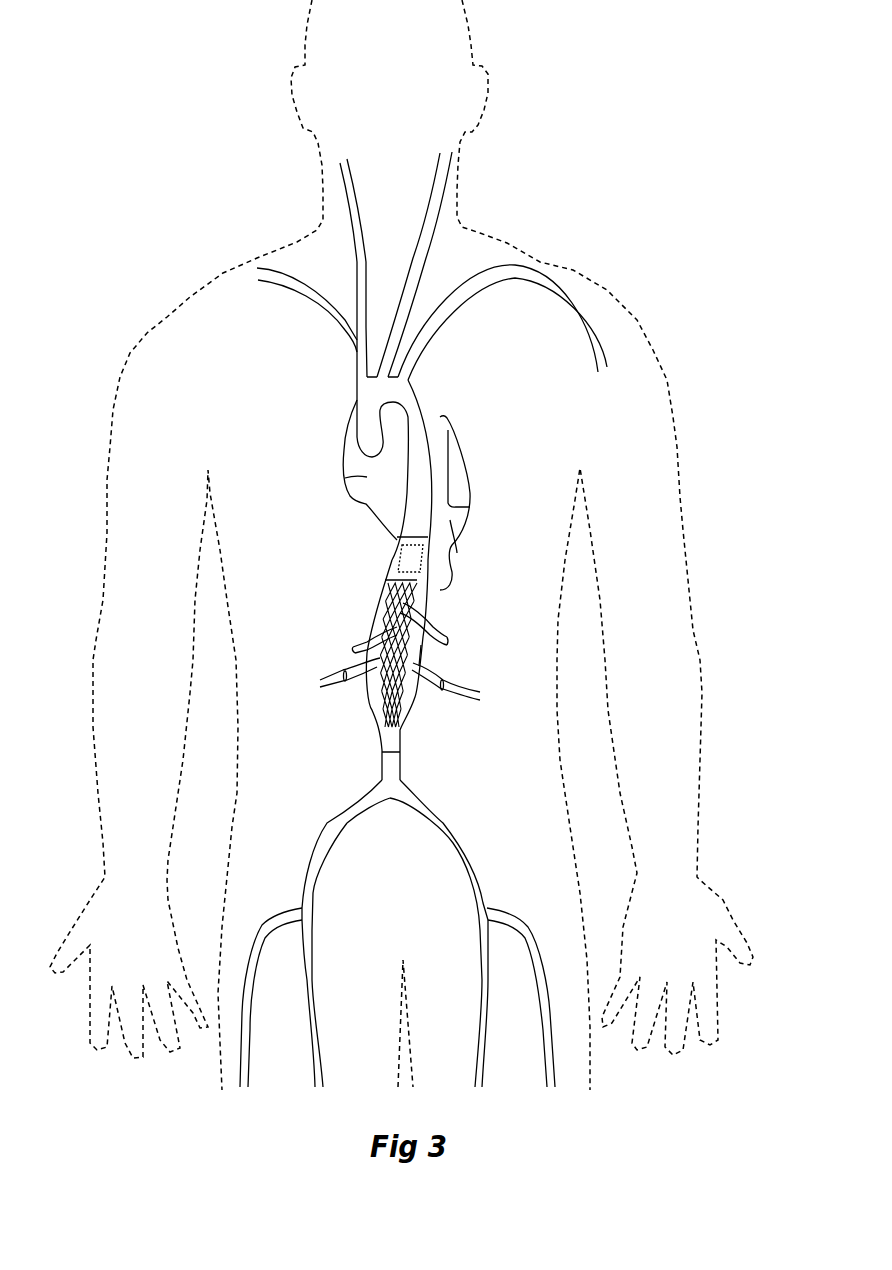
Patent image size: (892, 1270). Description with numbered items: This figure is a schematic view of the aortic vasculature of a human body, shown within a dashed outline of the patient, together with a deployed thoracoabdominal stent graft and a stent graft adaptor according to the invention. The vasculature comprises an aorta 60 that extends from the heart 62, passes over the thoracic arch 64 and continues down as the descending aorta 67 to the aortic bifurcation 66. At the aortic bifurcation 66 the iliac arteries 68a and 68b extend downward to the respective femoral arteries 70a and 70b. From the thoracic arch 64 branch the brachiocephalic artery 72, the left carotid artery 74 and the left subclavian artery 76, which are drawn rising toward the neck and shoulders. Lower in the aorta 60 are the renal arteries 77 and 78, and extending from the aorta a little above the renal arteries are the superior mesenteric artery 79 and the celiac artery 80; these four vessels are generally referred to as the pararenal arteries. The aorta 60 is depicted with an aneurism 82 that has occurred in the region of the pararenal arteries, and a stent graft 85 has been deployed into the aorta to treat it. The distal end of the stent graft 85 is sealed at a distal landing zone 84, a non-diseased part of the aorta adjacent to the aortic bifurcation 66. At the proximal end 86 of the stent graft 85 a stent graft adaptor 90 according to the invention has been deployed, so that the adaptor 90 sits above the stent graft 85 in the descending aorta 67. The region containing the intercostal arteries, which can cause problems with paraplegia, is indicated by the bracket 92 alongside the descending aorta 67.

The aorta 60 is at (448, 412).
The heart 62 is at (345, 478).
The thoracic arch 64 is at (358, 388).
The aortic bifurcation 66 is at (387, 808).
The descending aorta 67 is at (366, 594).
The iliac artery 68a is at (340, 823).
The iliac artery 68b is at (463, 847).
The femoral artery 70a is at (310, 980).
The femoral artery 70b is at (483, 998).
The brachiocephalic artery 72 is at (357, 348).
The left carotid artery 74 is at (425, 247).
The left subclavian artery 76 is at (425, 314).
The renal artery 77 is at (320, 686).
The renal artery 78 is at (480, 697).
The superior mesenteric artery 79 is at (350, 649).
The celiac artery 80 is at (455, 637).
The aneurism 82 is at (421, 652).
The distal landing zone 84 is at (403, 737).
The stent graft 85 is at (383, 703).
The proximal end 86 is at (393, 587).
The stent graft adaptor 90 is at (430, 558).
The bracket 92 is at (470, 507).